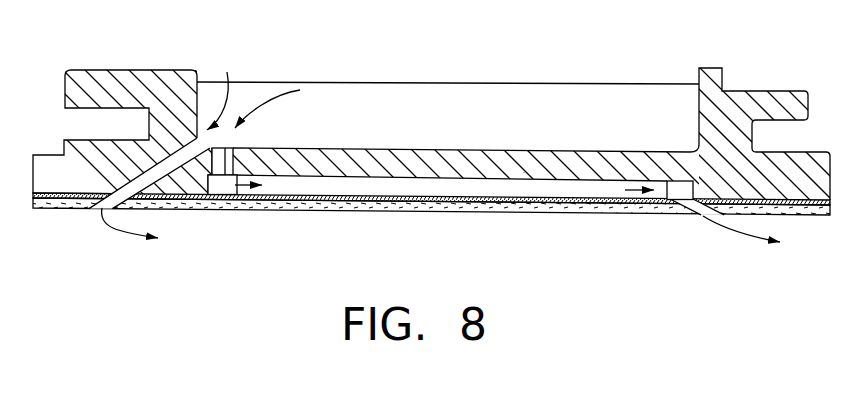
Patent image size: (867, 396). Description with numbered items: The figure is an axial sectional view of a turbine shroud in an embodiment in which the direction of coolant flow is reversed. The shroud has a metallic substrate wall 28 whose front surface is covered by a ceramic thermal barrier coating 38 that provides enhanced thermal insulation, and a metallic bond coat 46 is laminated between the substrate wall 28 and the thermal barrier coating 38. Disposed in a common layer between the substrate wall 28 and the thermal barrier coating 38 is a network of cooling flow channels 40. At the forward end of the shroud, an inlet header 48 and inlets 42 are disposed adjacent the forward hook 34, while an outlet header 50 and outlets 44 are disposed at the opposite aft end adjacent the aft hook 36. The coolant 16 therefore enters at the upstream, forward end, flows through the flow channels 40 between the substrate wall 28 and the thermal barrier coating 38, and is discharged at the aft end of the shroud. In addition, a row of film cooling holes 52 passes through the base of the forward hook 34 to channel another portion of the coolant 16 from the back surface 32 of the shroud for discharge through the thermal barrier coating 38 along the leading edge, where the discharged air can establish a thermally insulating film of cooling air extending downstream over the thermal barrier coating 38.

The coolant 16 is at (231, 94).
The substrate wall 28 is at (524, 172).
The back surface 32 is at (353, 148).
The forward hook 34 is at (143, 70).
The aft hook 36 is at (760, 92).
The thermal barrier coating 38 is at (447, 214).
The cooling flow channels 40 is at (450, 180).
The inlets 42 is at (222, 148).
The outlets 44 is at (697, 212).
The bond coat 46 is at (530, 189).
The inlet header 48 is at (221, 190).
The outlet header 50 is at (687, 190).
The film cooling holes 52 is at (146, 155).